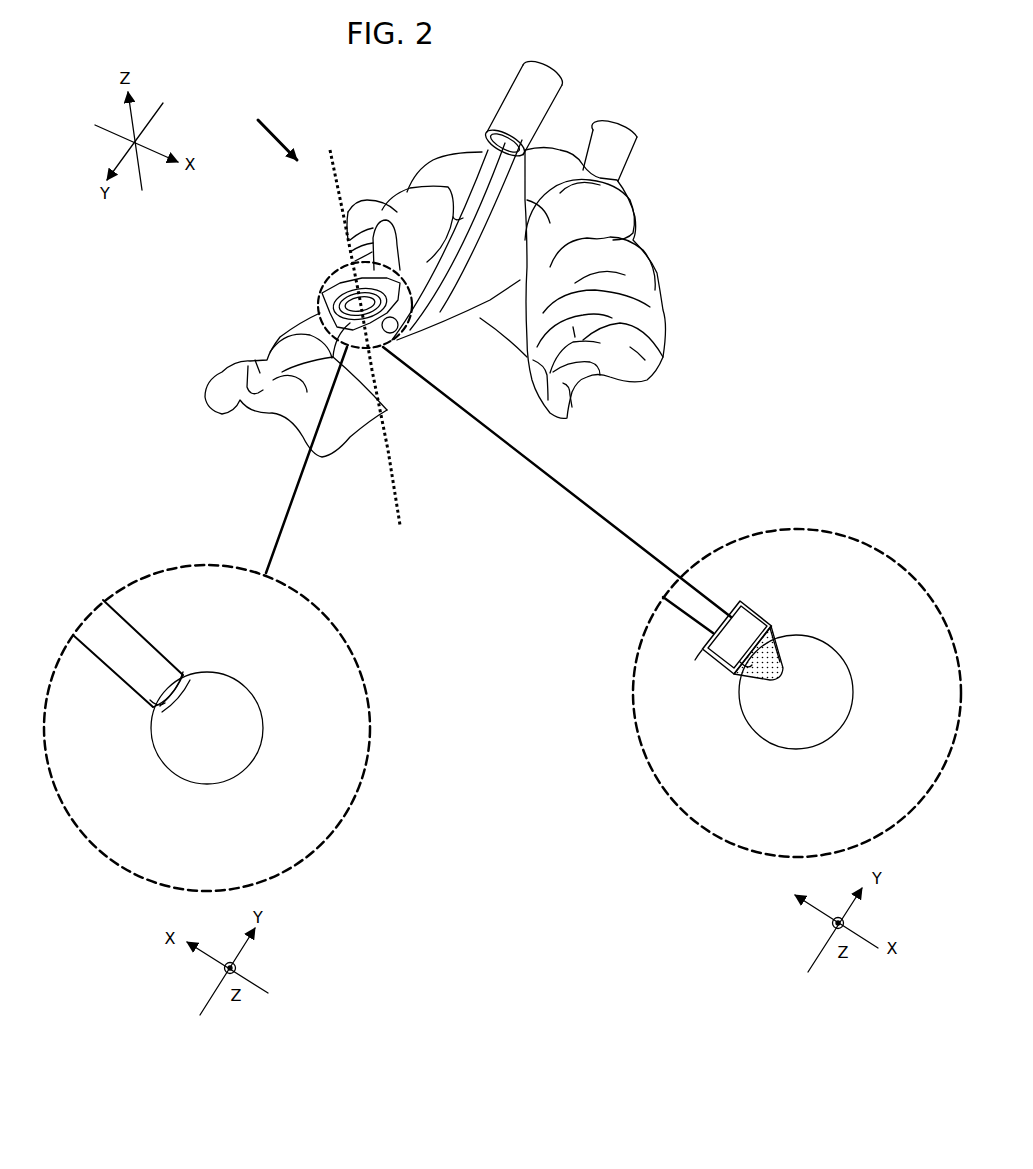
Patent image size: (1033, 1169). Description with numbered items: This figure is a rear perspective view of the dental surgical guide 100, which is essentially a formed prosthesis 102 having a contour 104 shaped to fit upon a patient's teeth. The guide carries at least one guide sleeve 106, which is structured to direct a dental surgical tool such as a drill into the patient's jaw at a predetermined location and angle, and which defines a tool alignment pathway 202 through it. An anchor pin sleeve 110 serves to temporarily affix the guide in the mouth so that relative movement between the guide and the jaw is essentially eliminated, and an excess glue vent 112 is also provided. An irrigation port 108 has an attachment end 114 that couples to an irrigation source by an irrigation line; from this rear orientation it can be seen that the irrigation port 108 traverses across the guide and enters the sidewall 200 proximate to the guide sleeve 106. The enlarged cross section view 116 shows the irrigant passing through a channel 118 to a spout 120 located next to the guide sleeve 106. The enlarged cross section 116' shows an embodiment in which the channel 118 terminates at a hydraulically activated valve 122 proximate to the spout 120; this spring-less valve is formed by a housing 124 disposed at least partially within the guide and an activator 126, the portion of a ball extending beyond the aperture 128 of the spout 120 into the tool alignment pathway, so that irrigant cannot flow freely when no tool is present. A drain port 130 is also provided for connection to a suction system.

The dental surgical guide 100 is at (260, 128).
The formed prosthesis 102 is at (634, 201).
The contour 104 is at (262, 367).
The guide sleeve 106 is at (320, 285).
The irrigation port 108 is at (497, 95).
The anchor pin sleeve 110 is at (363, 213).
The excess glue vent 112 is at (400, 325).
The attachment end 114 is at (555, 73).
The enlarged cross section view 116 is at (222, 619).
The enlarged cross section 116' is at (672, 602).
The channel 118 is at (487, 160).
The spout 120 is at (186, 672).
The hydraulically activated valve 122 is at (760, 612).
The housing 124 is at (714, 660).
The activator 126 is at (783, 652).
The aperture 128 is at (160, 710).
The drain port 130 is at (645, 140).
The sidewall 200 is at (432, 357).
The tool alignment pathway 202 is at (388, 484).